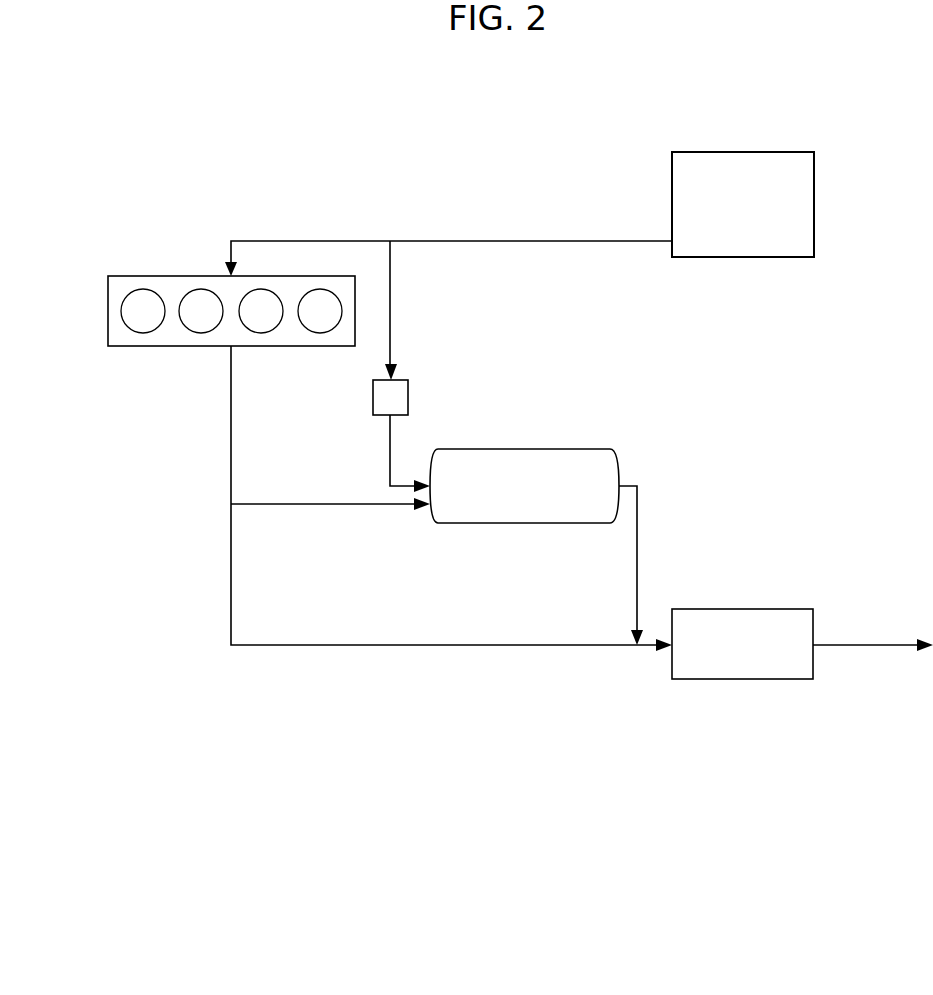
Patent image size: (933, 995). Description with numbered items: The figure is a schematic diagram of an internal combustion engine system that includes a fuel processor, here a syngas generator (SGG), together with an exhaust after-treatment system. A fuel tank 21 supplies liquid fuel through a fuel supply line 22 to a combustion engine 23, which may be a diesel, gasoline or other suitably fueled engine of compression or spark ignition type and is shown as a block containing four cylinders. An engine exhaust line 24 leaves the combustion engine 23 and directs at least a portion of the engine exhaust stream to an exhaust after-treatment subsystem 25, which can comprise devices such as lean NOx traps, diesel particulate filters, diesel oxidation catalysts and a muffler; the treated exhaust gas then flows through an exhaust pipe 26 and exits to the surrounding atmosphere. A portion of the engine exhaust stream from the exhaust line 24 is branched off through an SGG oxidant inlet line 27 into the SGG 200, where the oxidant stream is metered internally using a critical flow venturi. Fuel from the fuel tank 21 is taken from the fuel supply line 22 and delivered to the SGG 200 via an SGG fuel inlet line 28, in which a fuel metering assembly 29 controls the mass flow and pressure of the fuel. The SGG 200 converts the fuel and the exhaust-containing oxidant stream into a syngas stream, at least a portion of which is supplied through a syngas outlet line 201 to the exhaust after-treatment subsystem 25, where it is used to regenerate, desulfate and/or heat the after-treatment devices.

The fuel tank 21 is at (768, 145).
The fuel supply line 22 is at (302, 232).
The combustion engine 23 is at (153, 265).
The engine exhaust line 24 is at (222, 403).
The exhaust after-treatment subsystem 25 is at (700, 688).
The exhaust pipe 26 is at (877, 652).
The SGG oxidant inlet line 27 is at (335, 514).
The SGG fuel inlet line 28 is at (400, 318).
The fuel metering assembly 29 is at (415, 398).
The syngas generator (SGG) 200 is at (557, 442).
The syngas outlet line 201 is at (645, 567).